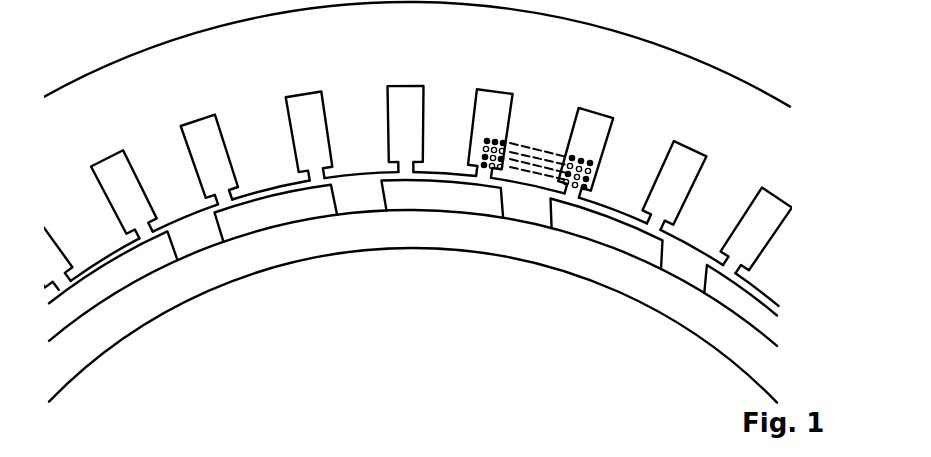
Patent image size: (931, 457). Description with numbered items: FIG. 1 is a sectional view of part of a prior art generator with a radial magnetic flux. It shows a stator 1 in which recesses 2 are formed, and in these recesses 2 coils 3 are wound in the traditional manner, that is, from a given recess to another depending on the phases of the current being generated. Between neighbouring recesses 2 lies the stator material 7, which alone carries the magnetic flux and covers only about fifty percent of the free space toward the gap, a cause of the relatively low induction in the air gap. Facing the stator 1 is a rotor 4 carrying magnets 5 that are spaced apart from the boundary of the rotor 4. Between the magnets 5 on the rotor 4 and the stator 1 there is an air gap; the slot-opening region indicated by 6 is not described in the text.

The stator 1 is at (649, 40).
The recess 2 is at (130, 165).
The coil 3 is at (505, 138).
The rotor 4 is at (503, 257).
The magnet 5 is at (403, 193).
The slot opening / tooth tip 6 is at (482, 180).
The material 7 is at (543, 130).